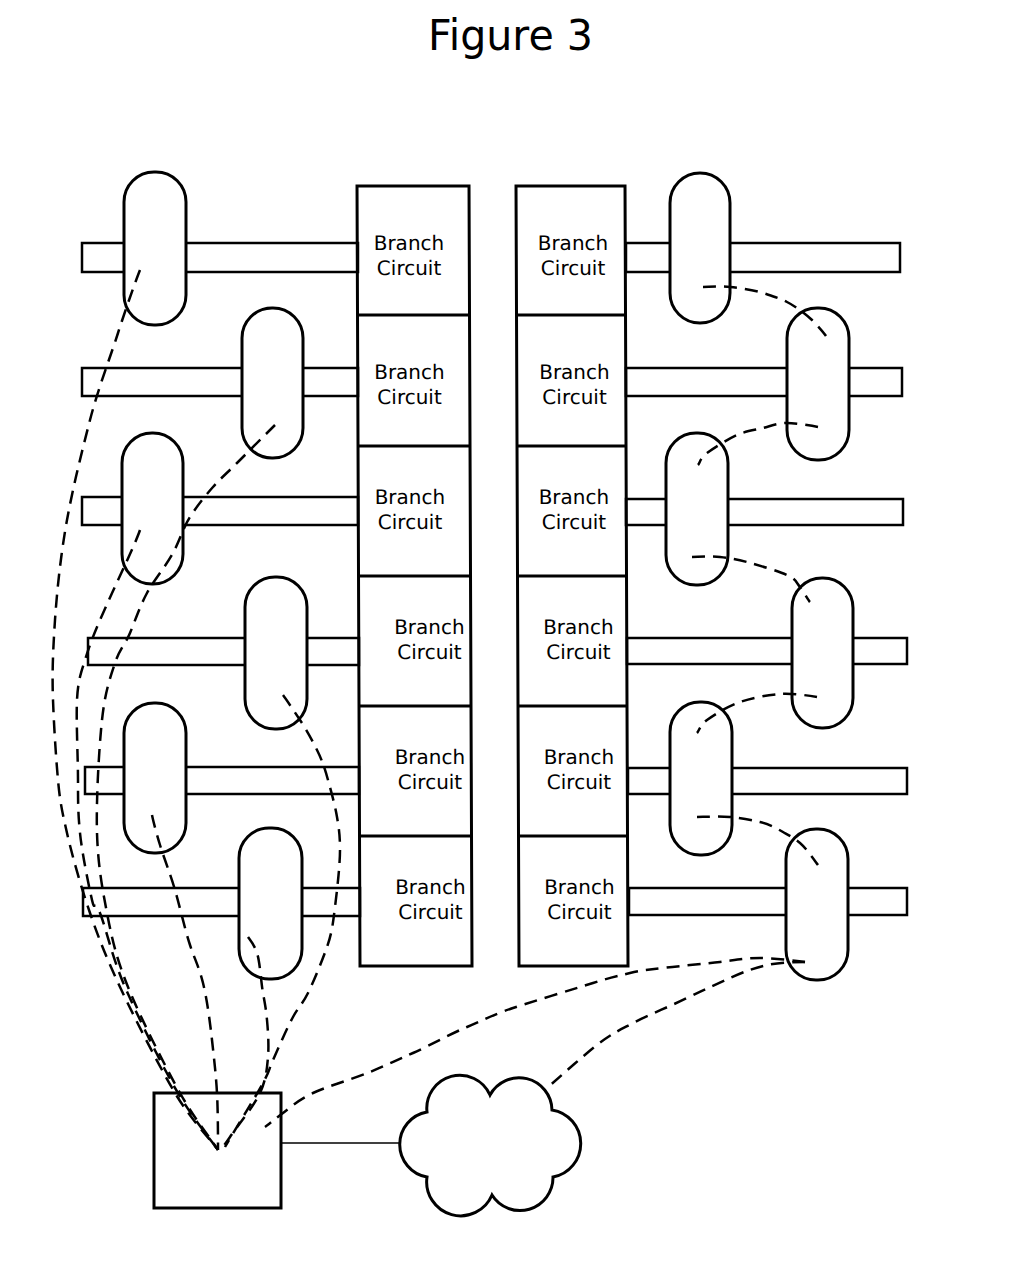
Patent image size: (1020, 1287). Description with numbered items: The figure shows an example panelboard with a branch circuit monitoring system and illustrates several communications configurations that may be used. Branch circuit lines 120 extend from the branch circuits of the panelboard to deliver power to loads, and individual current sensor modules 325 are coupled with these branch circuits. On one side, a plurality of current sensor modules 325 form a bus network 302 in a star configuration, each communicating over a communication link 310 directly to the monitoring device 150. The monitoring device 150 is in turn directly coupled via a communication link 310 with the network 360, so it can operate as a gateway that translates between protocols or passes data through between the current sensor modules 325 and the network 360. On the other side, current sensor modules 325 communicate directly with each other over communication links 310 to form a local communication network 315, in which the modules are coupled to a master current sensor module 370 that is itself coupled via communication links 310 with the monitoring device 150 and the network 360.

The branch circuit lines 120 is at (307, 238).
The monitoring device 150 is at (285, 1178).
The bus network 302 is at (128, 1036).
The communication links 310 is at (118, 333).
The local communication network 315 is at (781, 202).
The current sensor modules 325 is at (128, 212).
The network 360 is at (577, 1173).
The master current sensor module 370 is at (848, 968).